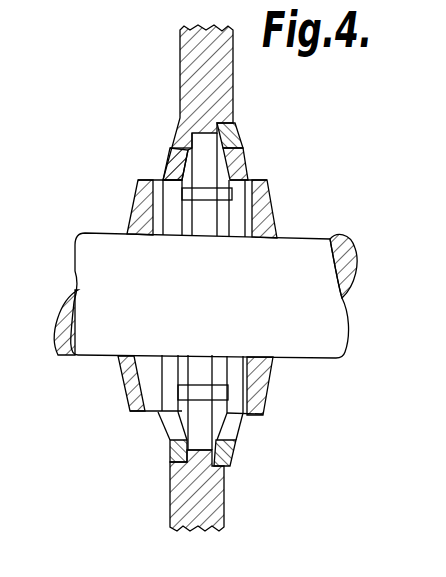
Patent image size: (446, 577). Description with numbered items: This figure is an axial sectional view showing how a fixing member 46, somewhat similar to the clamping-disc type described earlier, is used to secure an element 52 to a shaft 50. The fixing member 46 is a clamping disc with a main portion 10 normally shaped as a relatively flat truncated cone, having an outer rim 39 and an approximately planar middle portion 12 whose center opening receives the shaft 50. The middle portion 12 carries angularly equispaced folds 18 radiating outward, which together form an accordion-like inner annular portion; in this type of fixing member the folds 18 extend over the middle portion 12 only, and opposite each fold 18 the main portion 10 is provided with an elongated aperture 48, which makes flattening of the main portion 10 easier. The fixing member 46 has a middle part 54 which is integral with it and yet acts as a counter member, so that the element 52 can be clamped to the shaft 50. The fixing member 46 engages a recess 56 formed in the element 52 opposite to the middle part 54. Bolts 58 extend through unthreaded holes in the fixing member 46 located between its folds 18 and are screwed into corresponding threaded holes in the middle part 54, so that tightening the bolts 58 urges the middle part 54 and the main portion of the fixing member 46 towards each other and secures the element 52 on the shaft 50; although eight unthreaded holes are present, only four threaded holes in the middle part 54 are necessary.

The main portion 10 is at (232, 136).
The middle portion 12 is at (158, 178).
The folds 18 is at (155, 212).
The outer rim 39 is at (226, 117).
The fixing member 46 is at (280, 395).
The elongated aperture 48 is at (165, 130).
The shaft 50 is at (323, 313).
The element 52 is at (173, 493).
The middle part 54 is at (116, 395).
The recess 56 is at (232, 482).
The bolts 58 is at (213, 197).